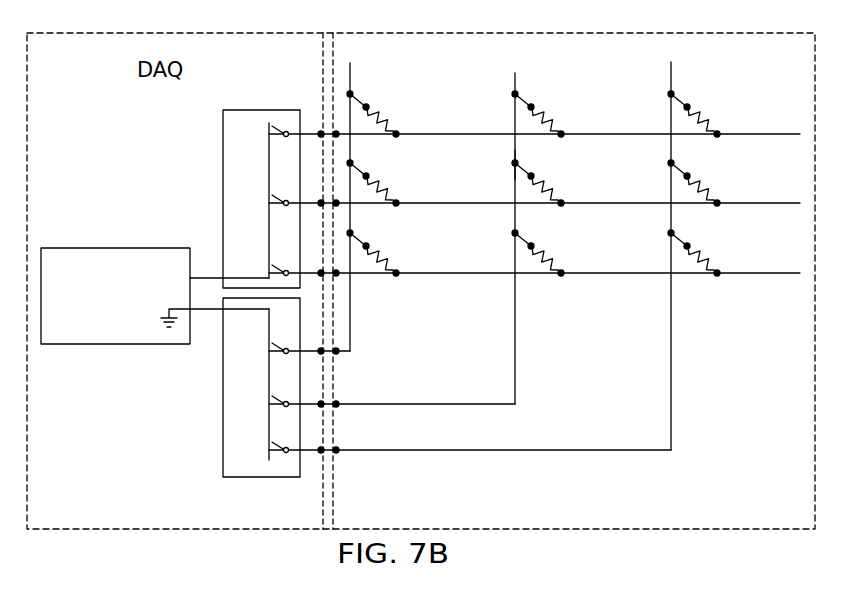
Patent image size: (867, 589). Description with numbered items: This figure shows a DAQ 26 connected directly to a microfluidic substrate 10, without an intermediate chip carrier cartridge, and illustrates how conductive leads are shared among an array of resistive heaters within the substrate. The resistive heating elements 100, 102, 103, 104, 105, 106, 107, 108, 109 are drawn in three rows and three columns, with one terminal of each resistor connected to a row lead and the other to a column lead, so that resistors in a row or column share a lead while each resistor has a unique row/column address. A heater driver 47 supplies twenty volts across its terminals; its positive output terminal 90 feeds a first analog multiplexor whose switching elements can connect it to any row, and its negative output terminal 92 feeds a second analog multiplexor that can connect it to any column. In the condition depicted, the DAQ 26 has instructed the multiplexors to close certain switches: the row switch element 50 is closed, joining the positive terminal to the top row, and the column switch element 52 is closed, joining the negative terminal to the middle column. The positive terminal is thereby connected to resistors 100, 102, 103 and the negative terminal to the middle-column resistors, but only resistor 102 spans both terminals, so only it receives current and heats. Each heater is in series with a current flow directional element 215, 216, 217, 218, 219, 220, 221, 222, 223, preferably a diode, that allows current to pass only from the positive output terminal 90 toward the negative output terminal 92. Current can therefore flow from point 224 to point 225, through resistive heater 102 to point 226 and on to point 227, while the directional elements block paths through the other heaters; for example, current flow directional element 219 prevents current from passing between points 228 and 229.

The DAQ 26 is at (78, 33).
The microfluidic substrate 10 is at (386, 33).
The heater driver 47 is at (80, 248).
The positive output terminal 90 is at (214, 278).
The negative output terminal 92 is at (217, 311).
The row switch element 50 is at (276, 123).
The column switch element 52 is at (272, 410).
The point 224 is at (336, 134).
The point 227 is at (336, 404).
The point 226 is at (515, 94).
The point 228 is at (515, 163).
The point 225 is at (589, 122).
The point 229 is at (589, 191).
The current flow directional element 215 is at (370, 89).
The current flow directional element 216 is at (535, 89).
The current flow directional element 217 is at (691, 89).
The current flow directional element 218 is at (370, 158).
The current flow directional element 219 is at (535, 158).
The current flow directional element 220 is at (691, 158).
The current flow directional element 221 is at (370, 228).
The current flow directional element 222 is at (535, 228).
The current flow directional element 223 is at (691, 228).
The resistive heating element 100 is at (396, 114).
The resistive heating element 102 is at (561, 111).
The resistive heating element 103 is at (717, 114).
The resistive heating element 104 is at (396, 183).
The resistive heating element 105 is at (561, 180).
The resistive heating element 106 is at (717, 183).
The resistive heating element 107 is at (396, 253).
The resistive heating element 108 is at (561, 253).
The resistive heating element 109 is at (717, 253).